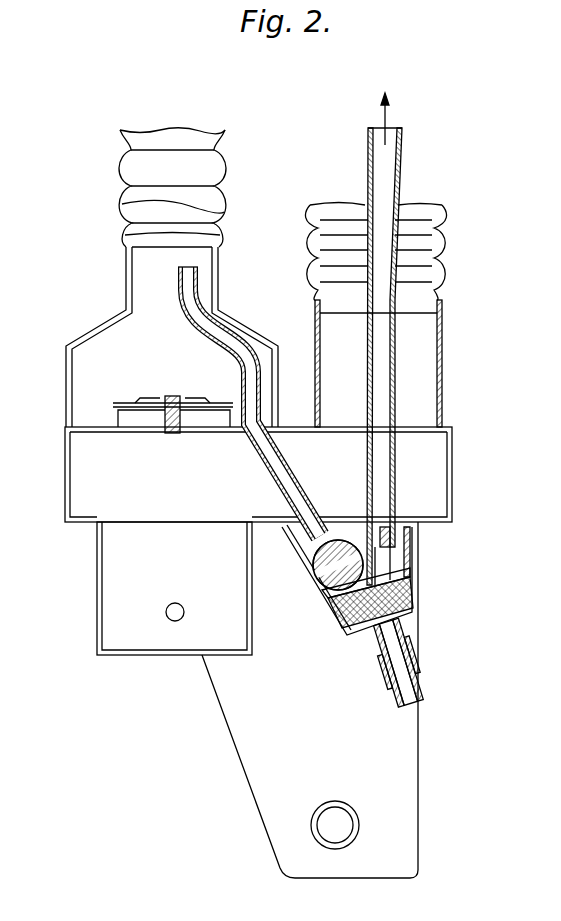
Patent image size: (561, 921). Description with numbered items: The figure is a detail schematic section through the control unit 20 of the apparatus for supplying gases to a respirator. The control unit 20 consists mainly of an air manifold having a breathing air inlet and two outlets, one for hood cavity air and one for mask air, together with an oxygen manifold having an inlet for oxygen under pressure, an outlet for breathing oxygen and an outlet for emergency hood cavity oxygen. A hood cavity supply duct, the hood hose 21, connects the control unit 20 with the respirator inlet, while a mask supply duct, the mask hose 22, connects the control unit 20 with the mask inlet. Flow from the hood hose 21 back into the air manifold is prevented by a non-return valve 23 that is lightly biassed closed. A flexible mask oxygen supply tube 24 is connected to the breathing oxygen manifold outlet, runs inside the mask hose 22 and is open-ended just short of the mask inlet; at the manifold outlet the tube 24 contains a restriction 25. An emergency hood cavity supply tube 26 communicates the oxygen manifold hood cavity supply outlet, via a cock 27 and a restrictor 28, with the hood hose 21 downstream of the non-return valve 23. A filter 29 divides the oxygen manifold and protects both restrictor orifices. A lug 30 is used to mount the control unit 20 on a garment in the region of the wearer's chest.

The control unit 20 is at (66, 470).
The hood cavity supply duct 21 is at (112, 169).
The mask supply duct 22 is at (455, 240).
The non-return valve 23 is at (103, 409).
The mask oxygen supply tube 24 is at (402, 155).
The restriction 25 is at (392, 520).
The emergency hood cavity supply tube 26 is at (168, 287).
The cock 27 is at (312, 582).
The restrictor 28 is at (338, 528).
The filter 29 is at (418, 598).
The lug 30 is at (262, 763).